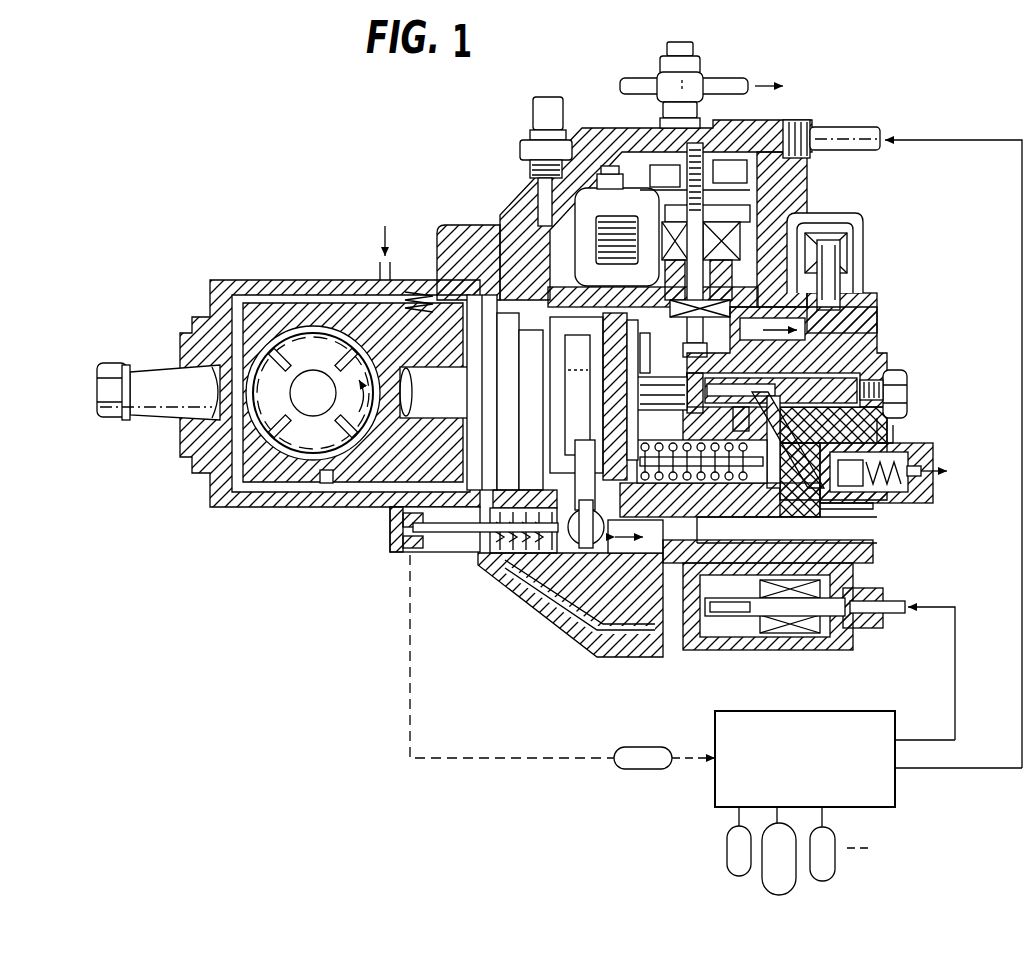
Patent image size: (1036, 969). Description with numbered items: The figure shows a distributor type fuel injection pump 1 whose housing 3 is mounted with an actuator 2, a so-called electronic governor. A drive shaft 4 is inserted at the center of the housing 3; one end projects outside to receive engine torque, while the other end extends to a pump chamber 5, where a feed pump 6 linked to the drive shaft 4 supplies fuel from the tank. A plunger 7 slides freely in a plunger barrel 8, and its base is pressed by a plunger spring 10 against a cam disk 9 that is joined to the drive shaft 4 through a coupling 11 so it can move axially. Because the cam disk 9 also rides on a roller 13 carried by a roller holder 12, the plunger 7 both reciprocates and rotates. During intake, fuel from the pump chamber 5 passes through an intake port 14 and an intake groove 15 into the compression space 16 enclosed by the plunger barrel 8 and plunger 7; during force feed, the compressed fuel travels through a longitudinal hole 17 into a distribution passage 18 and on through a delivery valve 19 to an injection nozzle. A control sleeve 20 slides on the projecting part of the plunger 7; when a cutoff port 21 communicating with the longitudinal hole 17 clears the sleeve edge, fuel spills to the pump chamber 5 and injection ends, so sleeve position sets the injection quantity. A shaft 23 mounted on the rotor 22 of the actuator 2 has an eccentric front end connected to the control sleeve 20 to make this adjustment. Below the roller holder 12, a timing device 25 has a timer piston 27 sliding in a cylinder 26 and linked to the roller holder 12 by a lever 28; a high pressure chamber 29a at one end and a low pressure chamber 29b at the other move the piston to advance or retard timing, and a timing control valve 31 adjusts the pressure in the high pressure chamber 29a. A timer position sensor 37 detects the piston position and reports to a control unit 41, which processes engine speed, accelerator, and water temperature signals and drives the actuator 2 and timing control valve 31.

The distributor type fuel injection pump 1 is at (395, 150).
The actuator 2 is at (725, 245).
The housing 3 is at (470, 243).
The drive shaft 4 is at (427, 335).
The pump chamber 5 is at (628, 280).
The feed pump 6 is at (450, 485).
The plunger 7 is at (840, 333).
The plunger barrel 8 is at (893, 420).
The cam disk 9 is at (637, 575).
The plunger spring 10 is at (703, 470).
The coupling 11 is at (556, 252).
The roller holder 12 is at (507, 557).
The roller 13 is at (547, 525).
The intake port 14 is at (823, 297).
The intake groove 15 is at (887, 437).
The compression space 16 is at (850, 375).
The longitudinal hole 17 is at (748, 400).
The distribution passage 18 is at (750, 383).
The delivery valve 19 is at (885, 500).
The control sleeve 20 is at (720, 403).
The cutoff port 21 is at (800, 343).
The rotor 22 is at (735, 230).
The shaft 23 is at (648, 285).
The timing device 25 is at (595, 682).
The cylinder 26 is at (612, 570).
The timer piston 27 is at (660, 575).
The lever 28 is at (570, 525).
The high pressure chamber 29a is at (665, 540).
The low pressure chamber 29b is at (475, 568).
The timing control valve 31 is at (813, 657).
The timer position sensor 37 is at (393, 560).
The control unit 41 is at (887, 710).